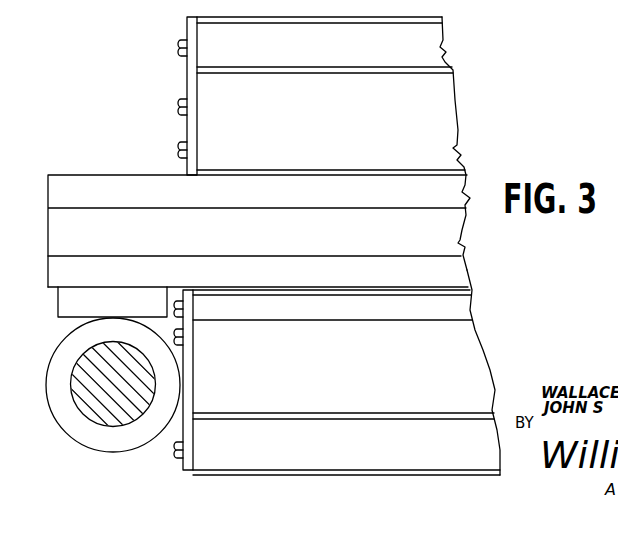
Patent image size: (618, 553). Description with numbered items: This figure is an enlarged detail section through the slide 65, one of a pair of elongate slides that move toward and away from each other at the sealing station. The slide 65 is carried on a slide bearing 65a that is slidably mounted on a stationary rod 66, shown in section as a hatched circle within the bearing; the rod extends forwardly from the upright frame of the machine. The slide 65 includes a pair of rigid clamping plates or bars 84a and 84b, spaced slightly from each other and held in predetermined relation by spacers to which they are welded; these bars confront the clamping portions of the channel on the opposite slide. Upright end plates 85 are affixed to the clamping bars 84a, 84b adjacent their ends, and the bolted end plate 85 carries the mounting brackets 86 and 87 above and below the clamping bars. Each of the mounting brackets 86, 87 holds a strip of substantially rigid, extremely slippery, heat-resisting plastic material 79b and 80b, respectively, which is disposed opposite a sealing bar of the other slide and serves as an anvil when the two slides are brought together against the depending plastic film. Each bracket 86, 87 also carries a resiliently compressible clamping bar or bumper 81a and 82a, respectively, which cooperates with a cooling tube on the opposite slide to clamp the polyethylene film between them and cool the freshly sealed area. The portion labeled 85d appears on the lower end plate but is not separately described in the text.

The mounting bracket 86 is at (440, 22).
The resiliently compressible clamping bar 81a is at (436, 61).
The plastic strip 79b is at (432, 146).
The upright end plate 85 is at (193, 85).
The clamping bar 84a is at (98, 190).
The clamping bar 84b is at (90, 267).
The slide 65 is at (167, 165).
The slide bearing 65a is at (148, 427).
The stationary rod 66 is at (97, 413).
The lower bar portion 85d is at (190, 397).
The plastic strip 80b is at (410, 379).
The resiliently compressible clamping bar 82a is at (427, 455).
The mounting bracket 87 is at (497, 460).